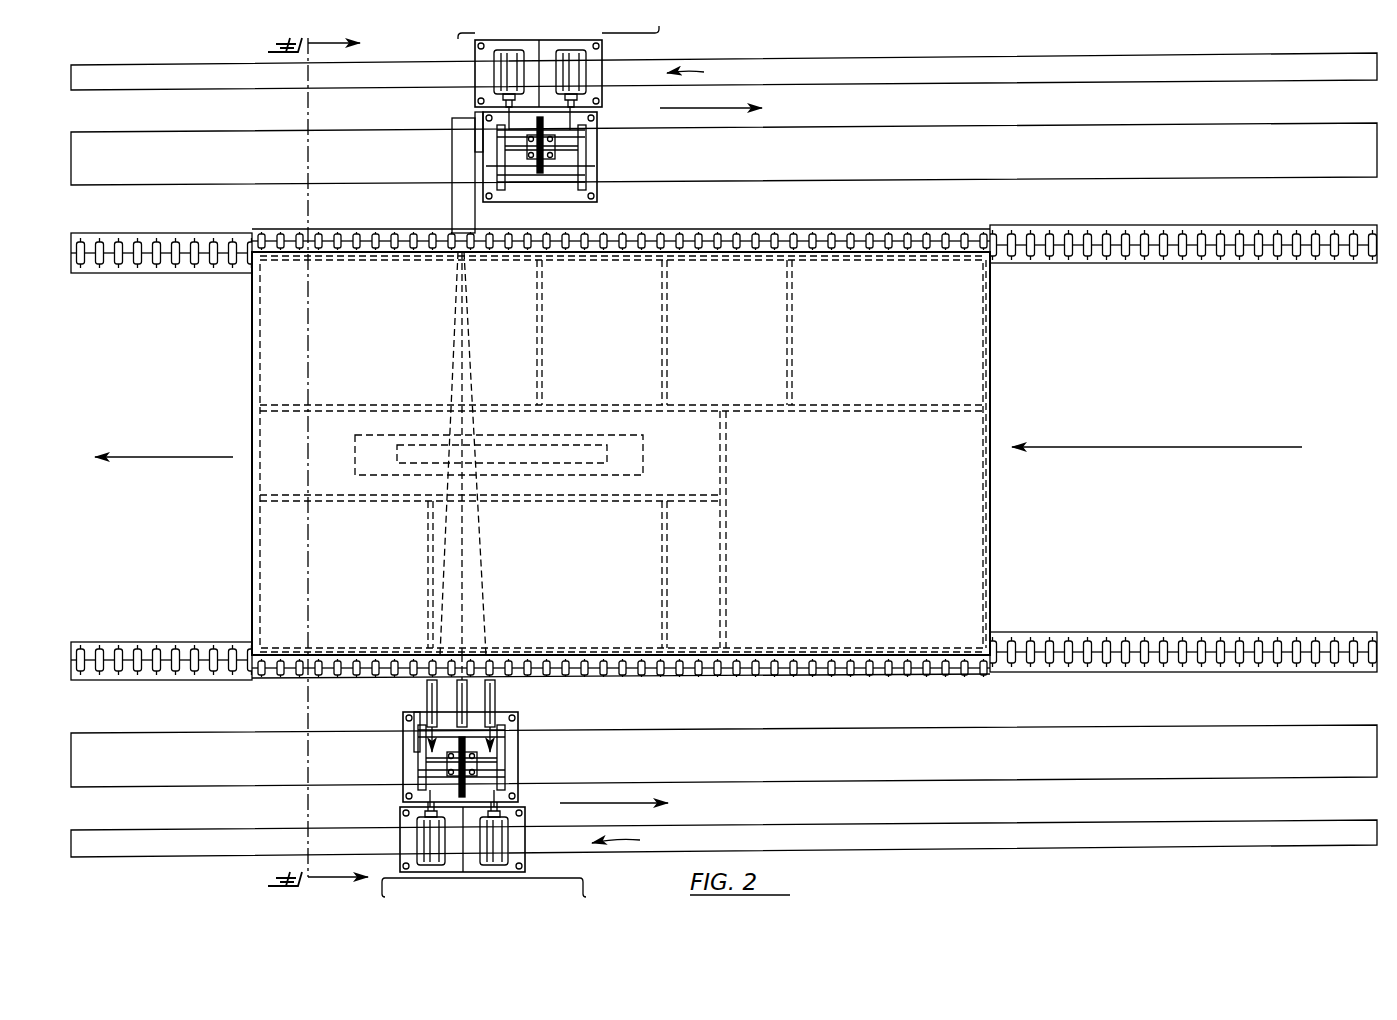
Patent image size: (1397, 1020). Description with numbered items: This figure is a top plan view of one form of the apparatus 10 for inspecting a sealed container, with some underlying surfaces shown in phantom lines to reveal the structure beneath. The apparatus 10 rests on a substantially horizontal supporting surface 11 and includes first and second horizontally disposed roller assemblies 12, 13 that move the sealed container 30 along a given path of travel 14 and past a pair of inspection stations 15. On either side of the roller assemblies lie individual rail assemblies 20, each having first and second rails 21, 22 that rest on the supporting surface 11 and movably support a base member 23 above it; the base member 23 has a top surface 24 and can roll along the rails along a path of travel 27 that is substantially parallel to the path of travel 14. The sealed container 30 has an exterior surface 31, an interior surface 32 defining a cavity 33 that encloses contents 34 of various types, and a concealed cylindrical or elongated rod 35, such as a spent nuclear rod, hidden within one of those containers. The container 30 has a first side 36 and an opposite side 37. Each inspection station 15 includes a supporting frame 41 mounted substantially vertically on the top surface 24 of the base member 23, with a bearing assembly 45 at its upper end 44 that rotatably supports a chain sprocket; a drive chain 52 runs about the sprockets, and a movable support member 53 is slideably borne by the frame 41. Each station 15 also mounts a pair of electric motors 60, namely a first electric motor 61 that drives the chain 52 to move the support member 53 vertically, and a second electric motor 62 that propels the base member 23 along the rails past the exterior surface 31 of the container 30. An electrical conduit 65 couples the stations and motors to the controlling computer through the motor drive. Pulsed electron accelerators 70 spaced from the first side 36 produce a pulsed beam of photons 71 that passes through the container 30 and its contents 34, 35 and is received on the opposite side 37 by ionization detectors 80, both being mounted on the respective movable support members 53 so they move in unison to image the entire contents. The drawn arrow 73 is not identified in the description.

The apparatus and method for inspecting a sealed container 10 is at (1292, 858).
The supporting surface 11 is at (1192, 566).
The first roller assembly 12 is at (1136, 256).
The second roller assembly 13 is at (1212, 640).
The path of travel 14 is at (163, 457).
The inspection station 15 is at (663, 456).
The rail assembly 20 is at (142, 57).
The first rail 21 is at (89, 74).
The second rail 22 is at (157, 170).
The base member 23 is at (520, 748).
The top surface 24 is at (600, 178).
The path of travel 27 is at (690, 110).
The sealed container 30 is at (1022, 544).
The exterior surface 31 is at (992, 380).
The interior surface 32 is at (990, 593).
The cavity 33 is at (985, 320).
The contents 34 is at (404, 405).
The cylindrical or elongated rod 35 is at (595, 435).
The first side 36 is at (858, 246).
The opposite side 37 is at (825, 675).
The supporting frame 41 is at (600, 165).
The upper end 44 is at (600, 188).
The bearing assembly 45 is at (530, 155).
The drive chain 52 is at (544, 170).
The movable support member 53 is at (470, 165).
The electric motors 60 is at (468, 97).
The first electric motor 61 is at (588, 72).
The second electric motor 62 is at (508, 73).
The electrical conduit 65 is at (470, 34).
The pulsed electron accelerators 70 is at (455, 213).
The pulsed beam of photons 71 is at (470, 615).
The direction of travel 73 is at (692, 113).
The ionization detectors 80 is at (412, 686).